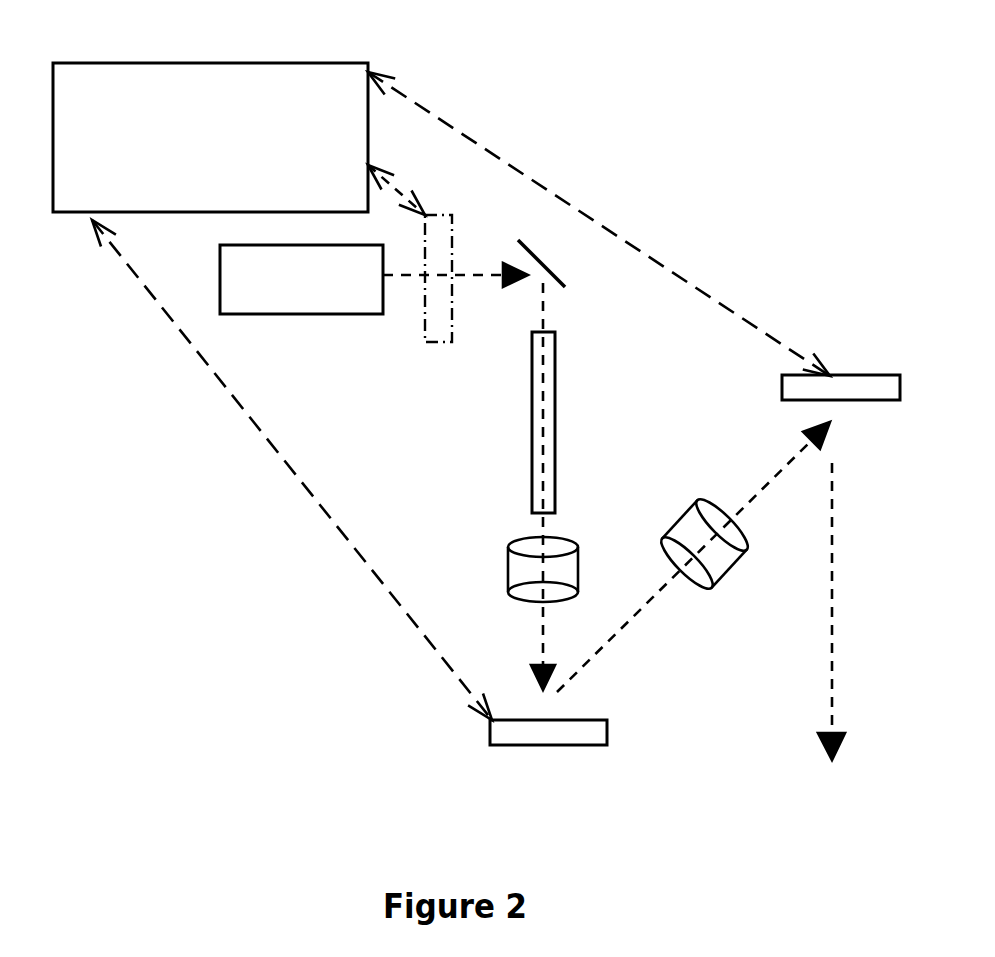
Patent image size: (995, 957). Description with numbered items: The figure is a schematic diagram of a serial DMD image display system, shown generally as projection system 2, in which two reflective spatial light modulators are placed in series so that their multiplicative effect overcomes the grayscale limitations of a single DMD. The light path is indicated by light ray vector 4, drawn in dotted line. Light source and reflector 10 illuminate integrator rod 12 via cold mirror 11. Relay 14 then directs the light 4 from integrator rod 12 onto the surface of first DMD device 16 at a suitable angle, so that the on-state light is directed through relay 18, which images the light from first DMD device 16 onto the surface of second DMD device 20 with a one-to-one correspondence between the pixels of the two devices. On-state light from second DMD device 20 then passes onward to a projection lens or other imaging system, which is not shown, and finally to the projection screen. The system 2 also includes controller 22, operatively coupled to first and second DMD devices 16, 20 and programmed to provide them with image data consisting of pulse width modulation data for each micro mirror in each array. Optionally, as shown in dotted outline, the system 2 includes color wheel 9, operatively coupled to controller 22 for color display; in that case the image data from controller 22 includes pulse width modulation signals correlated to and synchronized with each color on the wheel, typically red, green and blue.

The projection system 2 is at (503, 33).
The controller 22 is at (441, 360).
The light source and reflector 10 is at (301, 304).
The color wheel 9 is at (447, 256).
The light ray vector 4 is at (630, 511).
The cold mirror 11 is at (548, 250).
The integrator rod 12 is at (511, 422).
The relay 14 is at (500, 569).
The first DMD device 16 is at (526, 752).
The relay 18 is at (704, 570).
The second DMD device 20 is at (841, 362).